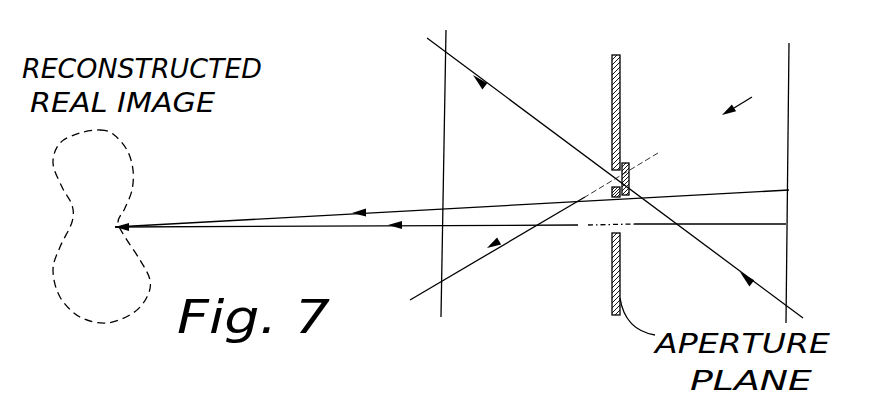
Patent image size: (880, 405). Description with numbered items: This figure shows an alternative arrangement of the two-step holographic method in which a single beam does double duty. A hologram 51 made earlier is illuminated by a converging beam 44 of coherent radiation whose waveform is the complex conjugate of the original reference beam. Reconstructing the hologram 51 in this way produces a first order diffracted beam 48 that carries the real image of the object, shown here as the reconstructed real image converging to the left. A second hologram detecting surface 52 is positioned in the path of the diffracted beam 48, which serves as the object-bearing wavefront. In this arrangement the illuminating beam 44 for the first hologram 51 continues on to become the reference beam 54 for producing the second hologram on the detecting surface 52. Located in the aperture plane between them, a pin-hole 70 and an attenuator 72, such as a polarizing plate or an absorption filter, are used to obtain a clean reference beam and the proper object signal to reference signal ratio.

The reconstruction beam 44 is at (804, 58).
The first order diffracted beam 48 is at (580, 223).
The hologram 51 is at (783, 135).
The second hologram detecting surface 52 is at (445, 115).
The reference beam 54 is at (493, 95).
The pin-hole 70 is at (607, 177).
The attenuator 72 is at (630, 165).